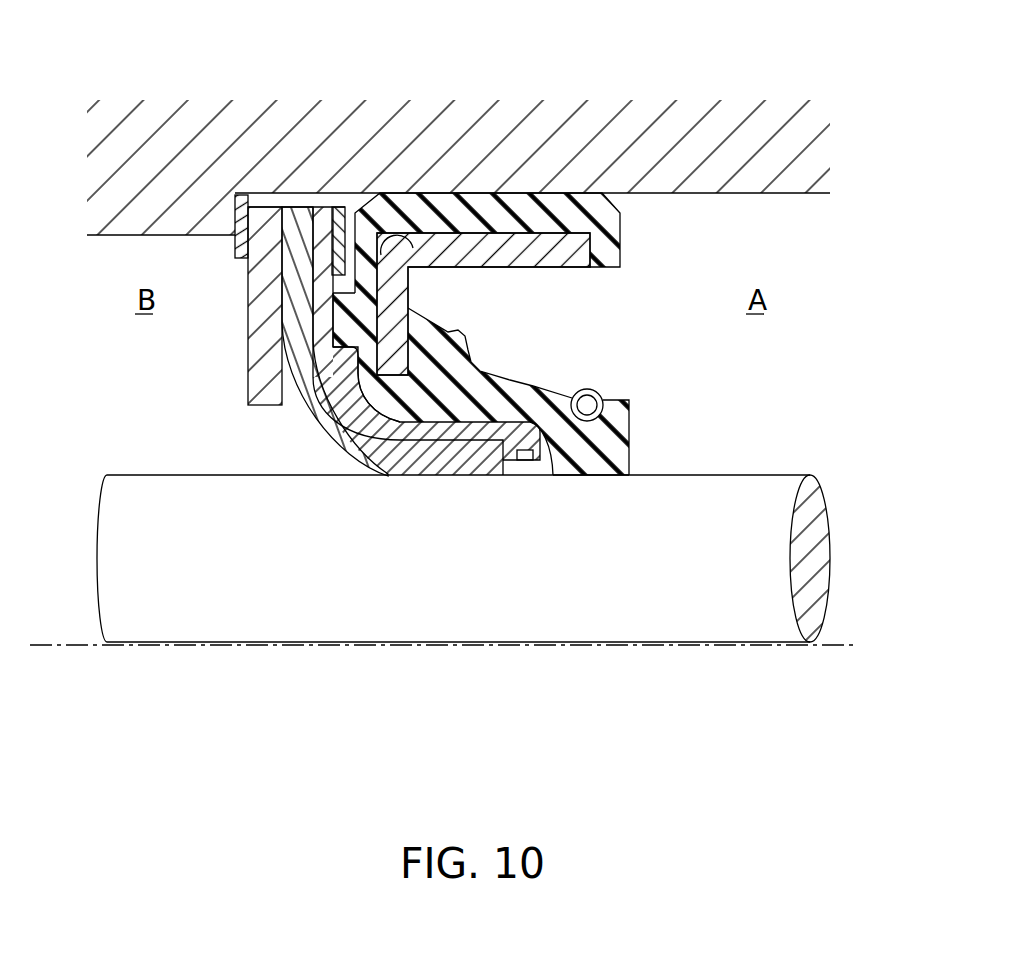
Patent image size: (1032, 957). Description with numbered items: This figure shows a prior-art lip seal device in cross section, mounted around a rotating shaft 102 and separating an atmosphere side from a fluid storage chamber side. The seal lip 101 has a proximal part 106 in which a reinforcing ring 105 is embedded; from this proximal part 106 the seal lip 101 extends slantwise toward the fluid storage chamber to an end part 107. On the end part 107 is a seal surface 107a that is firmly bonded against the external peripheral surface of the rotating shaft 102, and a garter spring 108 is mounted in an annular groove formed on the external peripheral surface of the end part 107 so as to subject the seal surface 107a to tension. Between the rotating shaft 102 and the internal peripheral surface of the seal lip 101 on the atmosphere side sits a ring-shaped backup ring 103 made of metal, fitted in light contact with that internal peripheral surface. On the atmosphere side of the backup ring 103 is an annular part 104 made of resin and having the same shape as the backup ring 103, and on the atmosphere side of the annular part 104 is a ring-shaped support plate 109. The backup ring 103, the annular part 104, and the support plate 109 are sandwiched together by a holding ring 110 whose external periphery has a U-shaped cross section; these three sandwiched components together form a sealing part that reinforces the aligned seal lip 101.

The seal lip 101 is at (530, 379).
The rotating shaft 102 is at (777, 493).
The backup ring 103 is at (449, 428).
The annular part 104 is at (332, 428).
The reinforcing ring 105 is at (458, 246).
The proximal part 106 is at (530, 210).
The end part 107 is at (628, 425).
The seal surface 107a is at (593, 460).
The garter spring 108 is at (600, 383).
The support plate 109 is at (262, 355).
The holding ring 110 is at (250, 200).